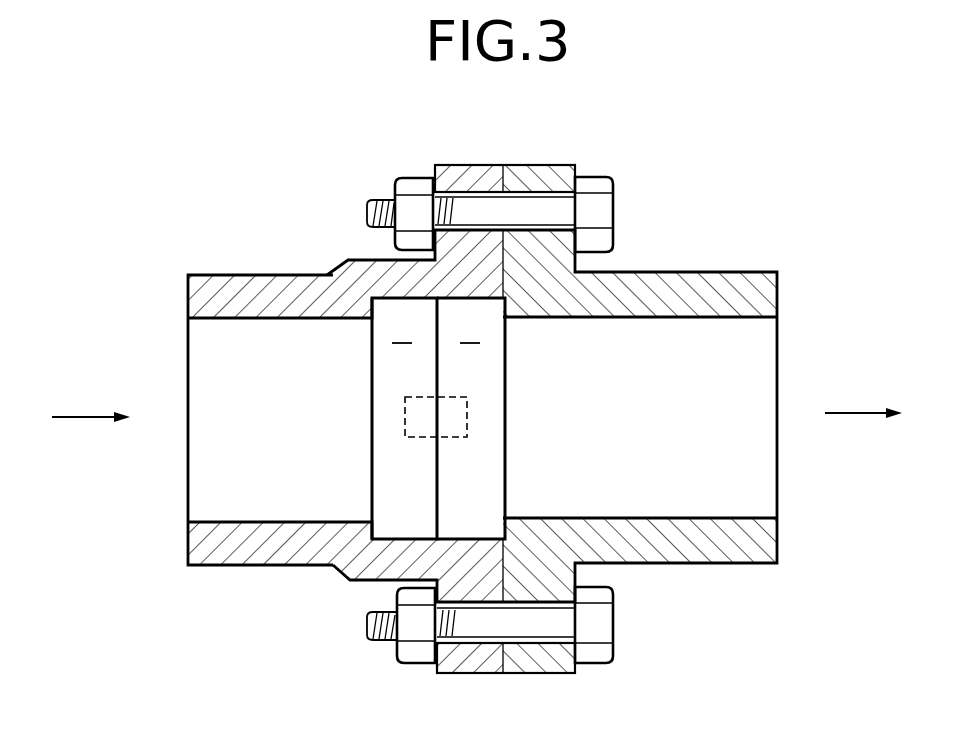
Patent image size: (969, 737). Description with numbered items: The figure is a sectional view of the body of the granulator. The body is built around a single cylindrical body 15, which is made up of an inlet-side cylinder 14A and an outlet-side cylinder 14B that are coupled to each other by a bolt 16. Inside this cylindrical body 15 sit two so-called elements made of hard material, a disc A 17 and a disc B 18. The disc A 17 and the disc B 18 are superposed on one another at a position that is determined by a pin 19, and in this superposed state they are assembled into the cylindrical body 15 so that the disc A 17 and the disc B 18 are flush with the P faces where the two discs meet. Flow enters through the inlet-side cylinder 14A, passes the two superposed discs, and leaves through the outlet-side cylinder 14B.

The inlet-side cylinder 14A is at (370, 270).
The outlet-side cylinder 14B is at (660, 274).
The cylindrical body 15 is at (240, 268).
The bolt 16 is at (613, 626).
The disc A 17 is at (408, 472).
The disc B 18 is at (470, 476).
The pin 19 is at (405, 405).
The faces P is at (438, 365).